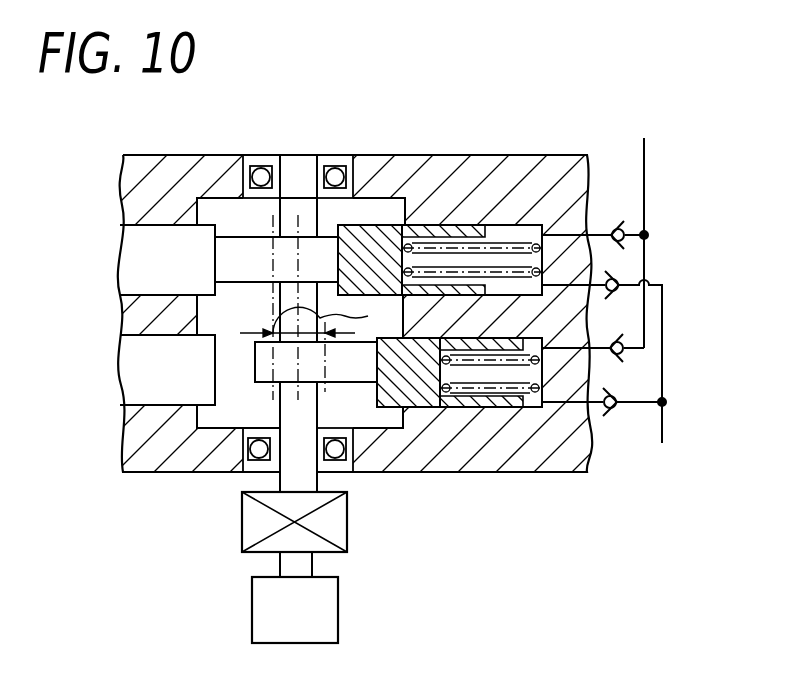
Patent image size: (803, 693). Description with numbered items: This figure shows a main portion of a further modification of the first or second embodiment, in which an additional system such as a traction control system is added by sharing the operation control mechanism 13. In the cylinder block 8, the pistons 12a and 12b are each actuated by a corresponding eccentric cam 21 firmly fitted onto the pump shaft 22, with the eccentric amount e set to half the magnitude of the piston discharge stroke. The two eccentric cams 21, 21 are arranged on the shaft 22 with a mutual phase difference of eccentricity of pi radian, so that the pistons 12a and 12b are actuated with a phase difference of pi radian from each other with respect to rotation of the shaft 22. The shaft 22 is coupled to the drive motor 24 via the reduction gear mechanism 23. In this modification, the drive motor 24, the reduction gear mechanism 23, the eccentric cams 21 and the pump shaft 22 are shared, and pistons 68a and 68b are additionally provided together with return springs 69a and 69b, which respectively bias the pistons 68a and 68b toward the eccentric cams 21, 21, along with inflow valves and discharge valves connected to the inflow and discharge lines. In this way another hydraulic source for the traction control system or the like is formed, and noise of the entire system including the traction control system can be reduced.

The cylinder block 8 is at (148, 187).
The piston 12a is at (150, 245).
The piston 12b is at (150, 351).
The operation control mechanism 13 is at (332, 106).
The eccentric cam 21 is at (223, 269).
The pump shaft 22 is at (298, 155).
The reduction gear mechanism 23 is at (347, 522).
The drive motor 24 is at (338, 606).
The piston 68a is at (388, 230).
The piston 68b is at (424, 395).
The return spring 69a is at (528, 245).
The return spring 69b is at (492, 400).